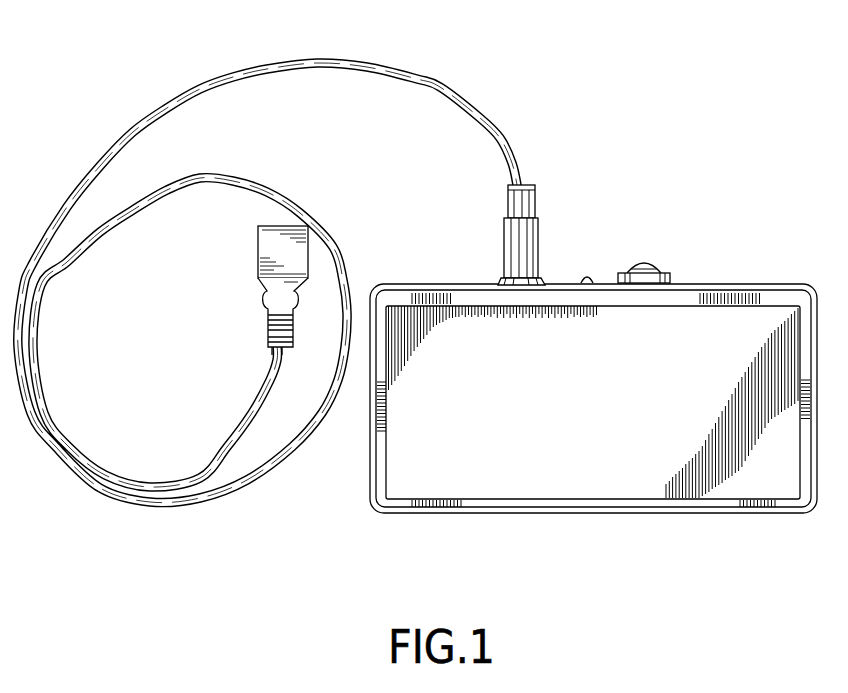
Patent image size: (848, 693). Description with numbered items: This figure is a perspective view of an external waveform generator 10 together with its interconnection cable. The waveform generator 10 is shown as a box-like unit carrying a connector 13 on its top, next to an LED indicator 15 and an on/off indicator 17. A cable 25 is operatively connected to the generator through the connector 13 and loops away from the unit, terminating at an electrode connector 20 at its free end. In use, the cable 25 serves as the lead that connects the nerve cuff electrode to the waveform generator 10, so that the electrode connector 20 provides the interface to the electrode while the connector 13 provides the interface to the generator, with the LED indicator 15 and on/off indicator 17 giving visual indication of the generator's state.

The external waveform generator 10 is at (528, 462).
The connector 13 is at (538, 232).
The LED indicator 15 is at (587, 286).
The on/off indicator 17 is at (673, 277).
The electrode connector 20 is at (259, 250).
The cable 25 is at (404, 76).